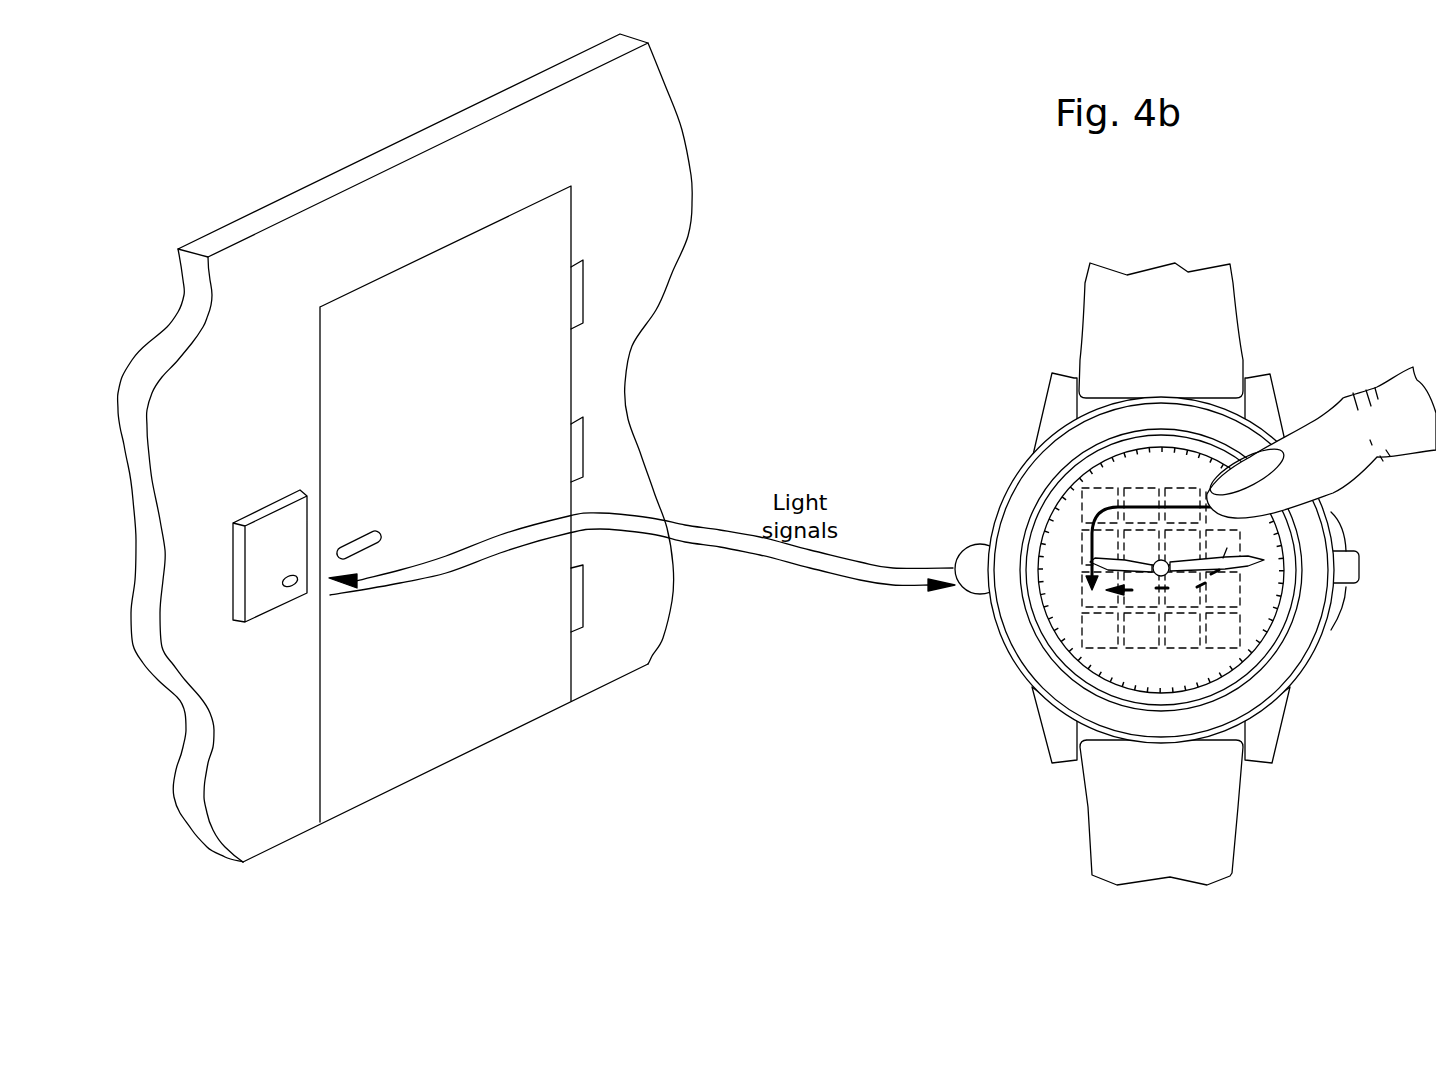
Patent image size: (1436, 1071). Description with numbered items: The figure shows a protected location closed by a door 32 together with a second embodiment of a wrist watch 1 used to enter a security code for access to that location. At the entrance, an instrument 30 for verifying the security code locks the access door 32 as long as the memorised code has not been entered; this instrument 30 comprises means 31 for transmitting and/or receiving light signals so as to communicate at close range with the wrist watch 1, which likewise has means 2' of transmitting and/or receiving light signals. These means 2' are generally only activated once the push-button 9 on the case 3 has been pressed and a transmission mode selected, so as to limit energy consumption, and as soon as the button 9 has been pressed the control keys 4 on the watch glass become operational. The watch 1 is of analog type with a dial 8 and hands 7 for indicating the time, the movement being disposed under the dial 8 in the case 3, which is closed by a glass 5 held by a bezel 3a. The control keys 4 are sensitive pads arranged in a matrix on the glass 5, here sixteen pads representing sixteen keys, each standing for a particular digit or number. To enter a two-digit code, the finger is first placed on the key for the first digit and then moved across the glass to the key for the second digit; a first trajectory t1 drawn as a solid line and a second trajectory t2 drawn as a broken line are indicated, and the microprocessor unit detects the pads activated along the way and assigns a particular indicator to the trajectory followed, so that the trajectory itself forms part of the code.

The wrist watch 1 is at (1000, 720).
The means of transmitting and/or receiving light signals 2' is at (959, 555).
The case 3 is at (1307, 663).
The bezel 3a is at (1033, 513).
The control keys 4 is at (1097, 643).
The glass 5 is at (1250, 625).
The hands 7 is at (1090, 562).
The dial 8 is at (1198, 673).
The control button 9 is at (1362, 572).
The first trajectory t1 is at (1112, 539).
The second trajectory t2 is at (1220, 576).
The instrument for verifying the security code 30 is at (239, 506).
The means for transmitting and/or receiving light signals 31 is at (292, 588).
The door 32 is at (558, 387).